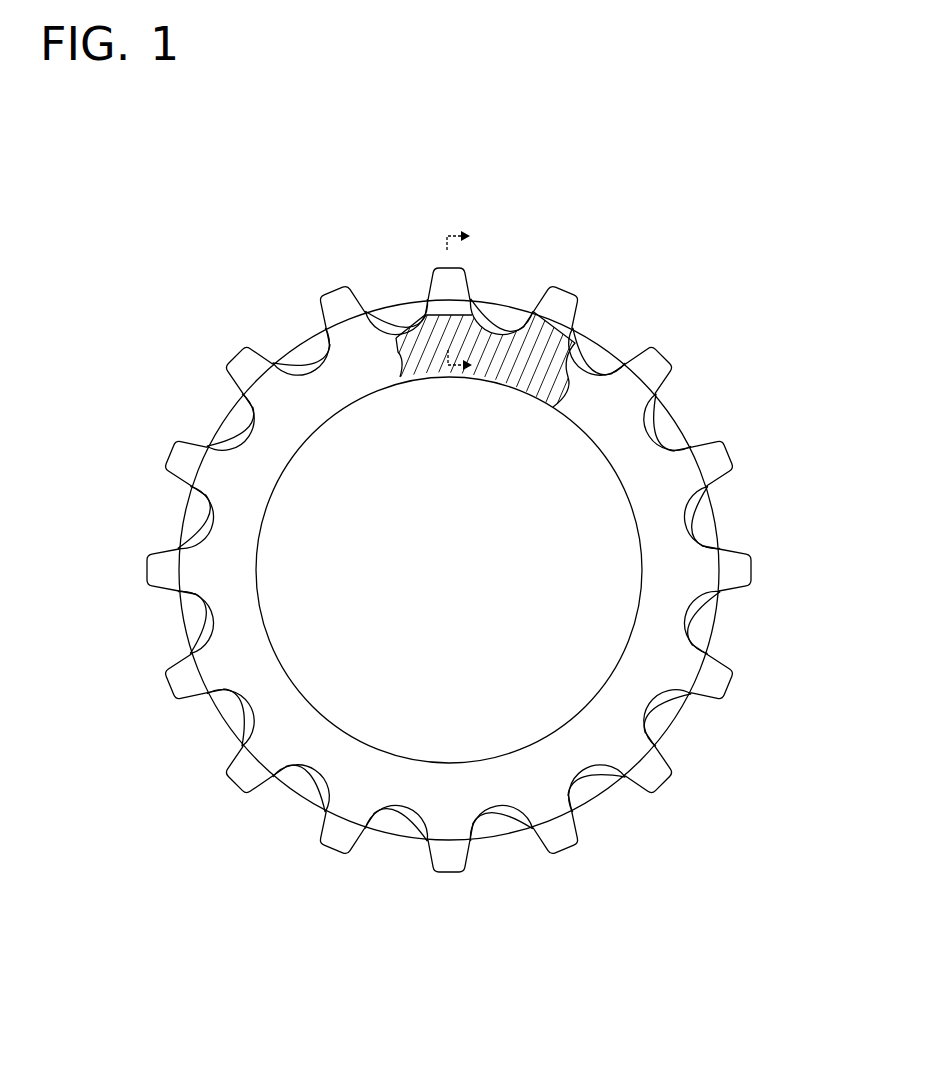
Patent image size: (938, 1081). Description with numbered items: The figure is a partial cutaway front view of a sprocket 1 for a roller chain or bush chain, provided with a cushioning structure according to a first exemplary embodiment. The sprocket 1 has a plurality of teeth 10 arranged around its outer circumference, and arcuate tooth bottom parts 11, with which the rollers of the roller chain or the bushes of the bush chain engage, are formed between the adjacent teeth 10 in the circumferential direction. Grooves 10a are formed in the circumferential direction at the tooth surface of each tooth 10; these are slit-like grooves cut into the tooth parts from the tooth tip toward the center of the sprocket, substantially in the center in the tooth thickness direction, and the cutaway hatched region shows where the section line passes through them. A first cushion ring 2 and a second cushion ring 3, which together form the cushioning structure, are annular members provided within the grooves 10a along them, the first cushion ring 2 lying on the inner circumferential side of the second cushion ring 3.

The sprocket 1 is at (250, 282).
The first cushion ring 2 is at (700, 528).
The second cushion ring 3 is at (680, 415).
The teeth 10 is at (150, 573).
The grooves 10a is at (562, 336).
The arcuate tooth bottom parts 11 is at (200, 518).